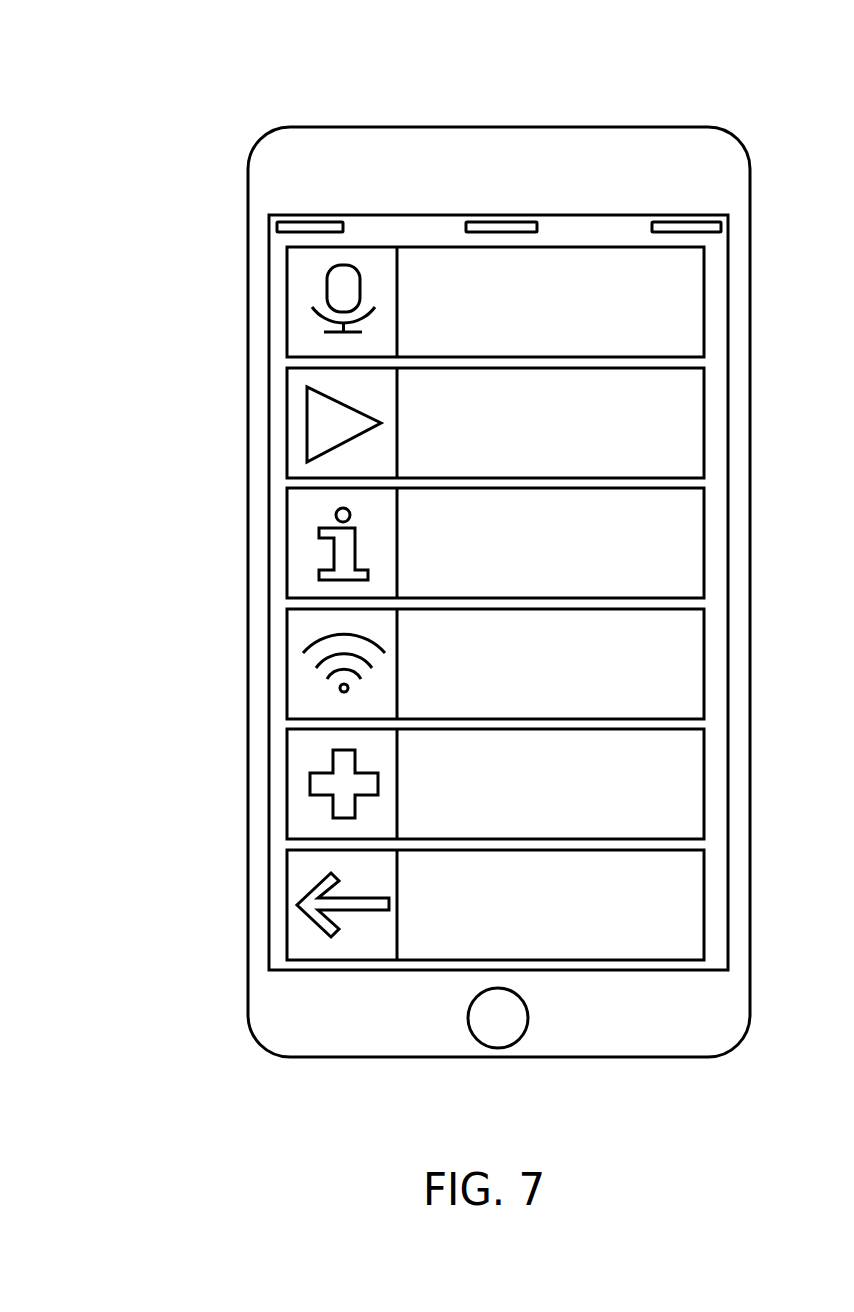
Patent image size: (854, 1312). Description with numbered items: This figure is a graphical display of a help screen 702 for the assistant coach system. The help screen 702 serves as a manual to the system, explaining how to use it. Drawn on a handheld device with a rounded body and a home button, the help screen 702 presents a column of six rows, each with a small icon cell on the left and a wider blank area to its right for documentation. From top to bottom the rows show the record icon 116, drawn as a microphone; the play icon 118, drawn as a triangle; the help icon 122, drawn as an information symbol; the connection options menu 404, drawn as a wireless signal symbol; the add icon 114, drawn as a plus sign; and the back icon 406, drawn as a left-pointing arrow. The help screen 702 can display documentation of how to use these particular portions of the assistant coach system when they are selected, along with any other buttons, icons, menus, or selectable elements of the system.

The help screen 702 is at (125, 44).
The record icon 116 is at (298, 263).
The play icon 118 is at (298, 391).
The help icon 122 is at (298, 518).
The connection options menu 404 is at (298, 646).
The add icon 114 is at (298, 780).
The back icon 406 is at (298, 905).